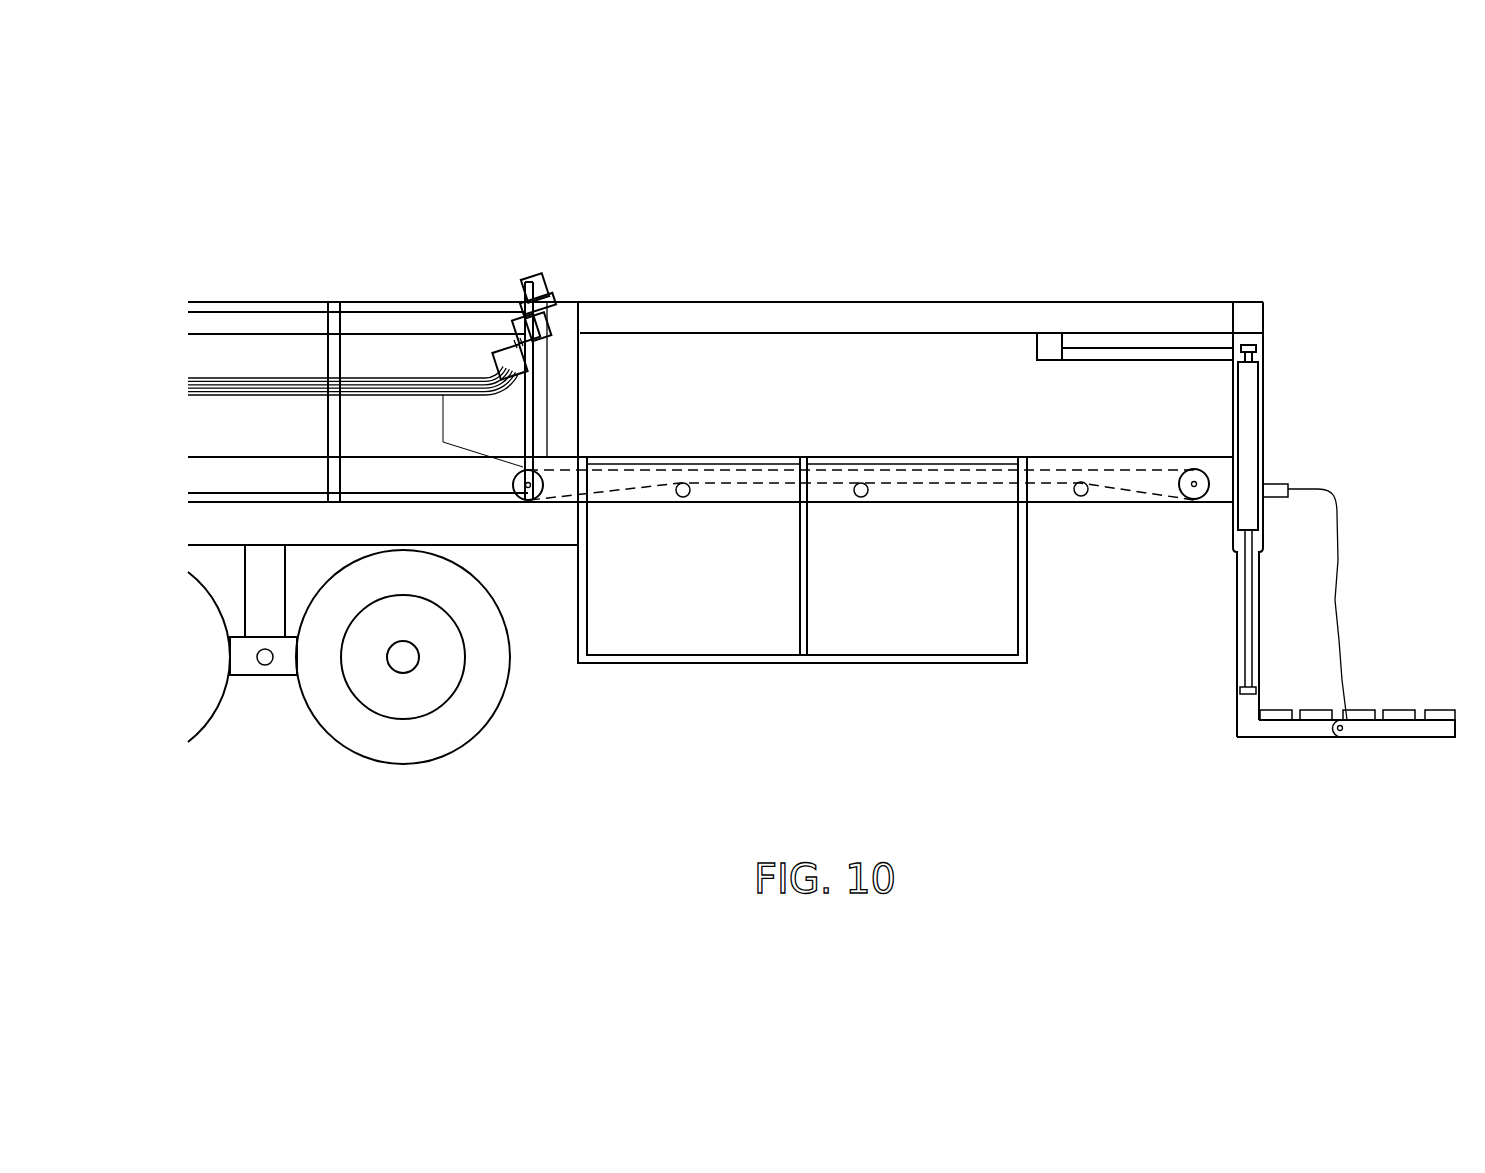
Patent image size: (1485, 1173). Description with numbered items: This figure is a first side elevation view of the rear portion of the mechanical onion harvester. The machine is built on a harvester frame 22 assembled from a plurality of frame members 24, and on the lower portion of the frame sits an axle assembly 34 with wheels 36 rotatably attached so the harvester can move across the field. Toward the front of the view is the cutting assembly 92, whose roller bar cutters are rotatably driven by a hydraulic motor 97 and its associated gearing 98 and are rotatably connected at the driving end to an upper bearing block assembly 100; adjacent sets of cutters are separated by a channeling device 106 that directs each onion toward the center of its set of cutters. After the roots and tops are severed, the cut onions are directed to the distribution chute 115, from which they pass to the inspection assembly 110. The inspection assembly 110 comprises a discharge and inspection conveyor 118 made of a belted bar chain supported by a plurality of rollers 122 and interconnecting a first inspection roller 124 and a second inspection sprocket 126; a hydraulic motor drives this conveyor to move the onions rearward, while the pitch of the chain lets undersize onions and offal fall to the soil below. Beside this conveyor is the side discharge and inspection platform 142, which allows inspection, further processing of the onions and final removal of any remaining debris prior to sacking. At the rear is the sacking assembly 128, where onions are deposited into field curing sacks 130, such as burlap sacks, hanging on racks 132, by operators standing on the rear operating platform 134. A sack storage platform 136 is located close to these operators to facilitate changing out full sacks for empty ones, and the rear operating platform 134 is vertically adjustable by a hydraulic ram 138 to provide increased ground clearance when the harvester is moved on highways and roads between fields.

The harvester frame 22 is at (724, 504).
The frame members 24 is at (1002, 322).
The axle assembly 34 is at (265, 690).
The wheels 36 is at (463, 730).
The cutting assembly 92 is at (304, 372).
The hydraulic motor 97 is at (535, 275).
The gearing 98 is at (546, 300).
The upper bearing block assembly 100 is at (547, 358).
The channeling device 106 is at (404, 356).
The inspection assembly 110 is at (735, 425).
The distribution chute 115 is at (443, 421).
The discharge and inspection conveyor 118 is at (1052, 468).
The rollers 122 is at (685, 497).
The first inspection roller 124 is at (1194, 469).
The second inspection sprocket 126 is at (528, 505).
The sacking assembly 128 is at (1378, 490).
The field curing sacks 130 is at (1320, 583).
The racks 132 is at (1292, 480).
The rear operating platform 134 is at (1400, 705).
The sack storage platform 136 is at (1103, 362).
The hydraulic ram 138 is at (1243, 641).
The side discharge and inspection platform 142 is at (855, 663).